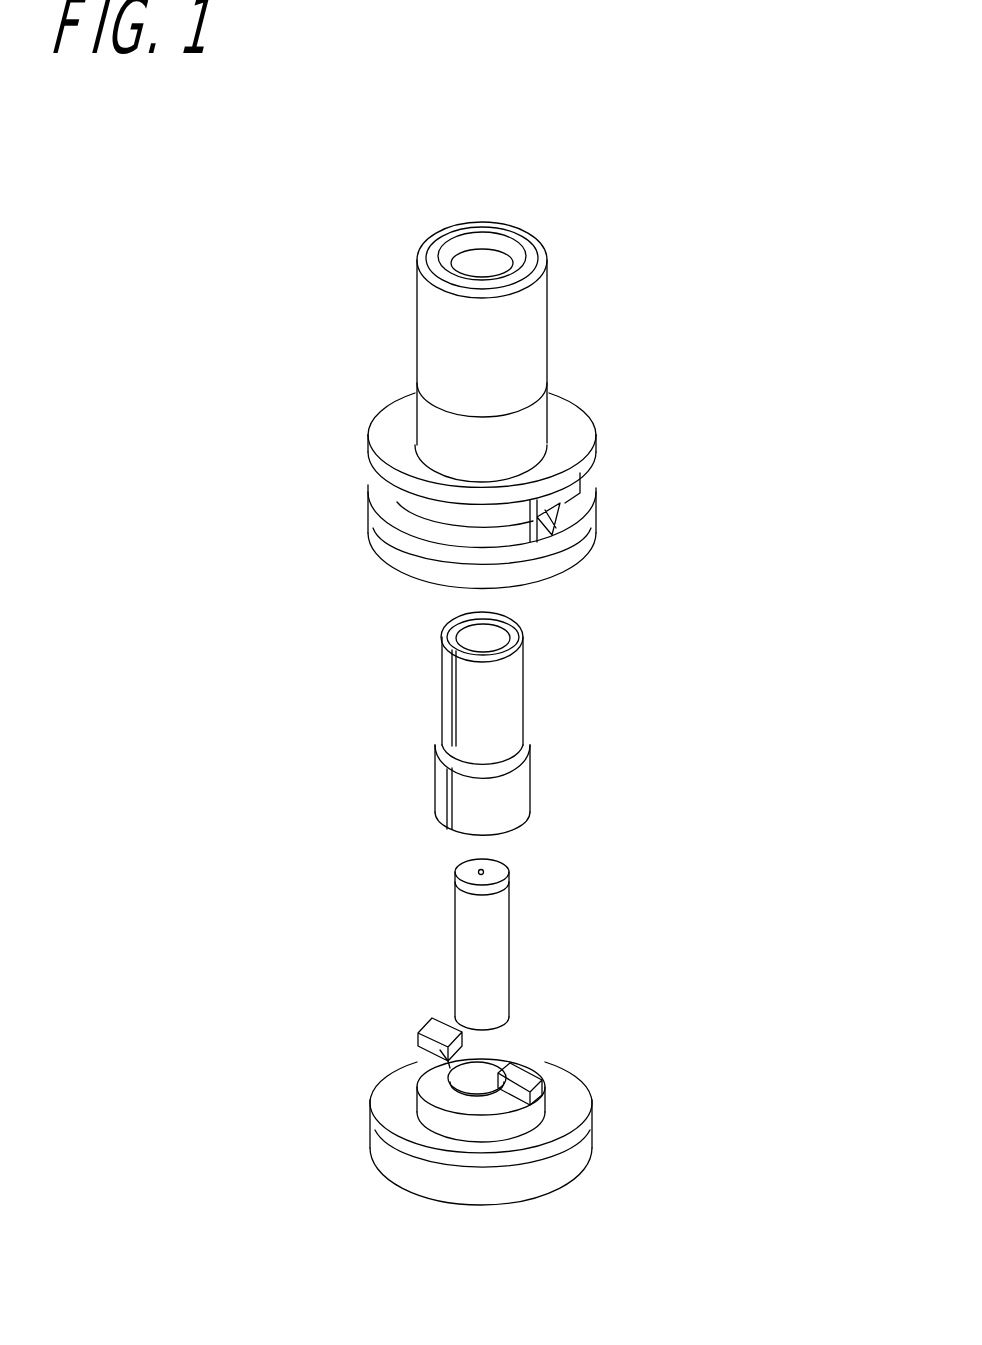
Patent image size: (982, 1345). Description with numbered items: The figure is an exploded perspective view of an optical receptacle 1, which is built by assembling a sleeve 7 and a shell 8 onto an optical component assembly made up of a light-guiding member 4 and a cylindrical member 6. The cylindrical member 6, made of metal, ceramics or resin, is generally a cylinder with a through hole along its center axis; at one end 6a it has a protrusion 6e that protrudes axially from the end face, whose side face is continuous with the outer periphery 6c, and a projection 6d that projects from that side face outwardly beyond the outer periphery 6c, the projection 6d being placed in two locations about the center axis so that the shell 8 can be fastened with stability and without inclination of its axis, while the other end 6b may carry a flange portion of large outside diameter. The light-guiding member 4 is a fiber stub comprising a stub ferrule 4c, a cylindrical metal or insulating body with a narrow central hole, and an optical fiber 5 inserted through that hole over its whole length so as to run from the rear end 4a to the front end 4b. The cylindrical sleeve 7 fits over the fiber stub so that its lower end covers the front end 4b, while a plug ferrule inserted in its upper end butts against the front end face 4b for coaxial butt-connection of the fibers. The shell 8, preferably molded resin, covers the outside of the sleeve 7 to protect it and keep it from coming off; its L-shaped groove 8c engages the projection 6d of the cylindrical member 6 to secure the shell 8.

The optical receptacle 1 is at (625, 190).
The shell 8 is at (532, 338).
The L-shaped groove 8c is at (552, 513).
The sleeve 7 is at (510, 722).
The light-guiding member (fiber stub) 4 is at (498, 955).
The rear end 4a is at (503, 1027).
The front end 4b is at (492, 870).
The stub ferrule 4c is at (495, 918).
The optical fiber 5 is at (481, 872).
The cylindrical member 6 is at (530, 1180).
The one end 6a is at (527, 1062).
The other end 6b is at (457, 1205).
The outer periphery 6c is at (530, 1115).
The projection 6d is at (437, 1020).
The protrusion 6e is at (440, 1053).